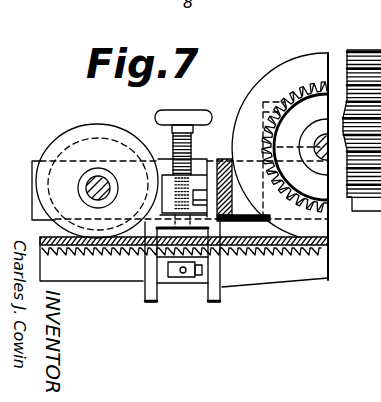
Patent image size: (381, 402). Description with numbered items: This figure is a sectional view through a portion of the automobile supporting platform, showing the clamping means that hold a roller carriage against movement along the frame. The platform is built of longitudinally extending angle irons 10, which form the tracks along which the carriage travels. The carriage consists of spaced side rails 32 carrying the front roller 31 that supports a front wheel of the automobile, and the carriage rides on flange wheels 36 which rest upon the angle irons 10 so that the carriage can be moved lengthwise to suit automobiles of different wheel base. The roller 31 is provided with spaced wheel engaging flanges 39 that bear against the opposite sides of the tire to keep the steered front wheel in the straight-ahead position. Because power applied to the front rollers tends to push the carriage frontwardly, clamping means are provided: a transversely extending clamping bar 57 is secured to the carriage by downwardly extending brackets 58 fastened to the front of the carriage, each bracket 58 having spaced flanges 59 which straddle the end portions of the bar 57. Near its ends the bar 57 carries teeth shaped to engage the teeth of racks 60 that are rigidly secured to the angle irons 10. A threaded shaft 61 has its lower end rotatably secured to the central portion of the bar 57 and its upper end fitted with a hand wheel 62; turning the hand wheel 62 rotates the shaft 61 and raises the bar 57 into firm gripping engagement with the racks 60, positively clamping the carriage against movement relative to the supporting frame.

The angle irons 10 is at (318, 277).
The front roller 31 is at (308, 82).
The side rails 32 is at (157, 160).
The flange wheels 36 is at (72, 143).
The wheel engaging flanges 39 is at (318, 53).
The clamping bar 57 is at (210, 282).
The brackets 58 is at (240, 250).
The spaced flanges 59 is at (147, 274).
The racks 60 is at (290, 247).
The threaded shaft 61 is at (193, 158).
The hand wheel 62 is at (198, 115).